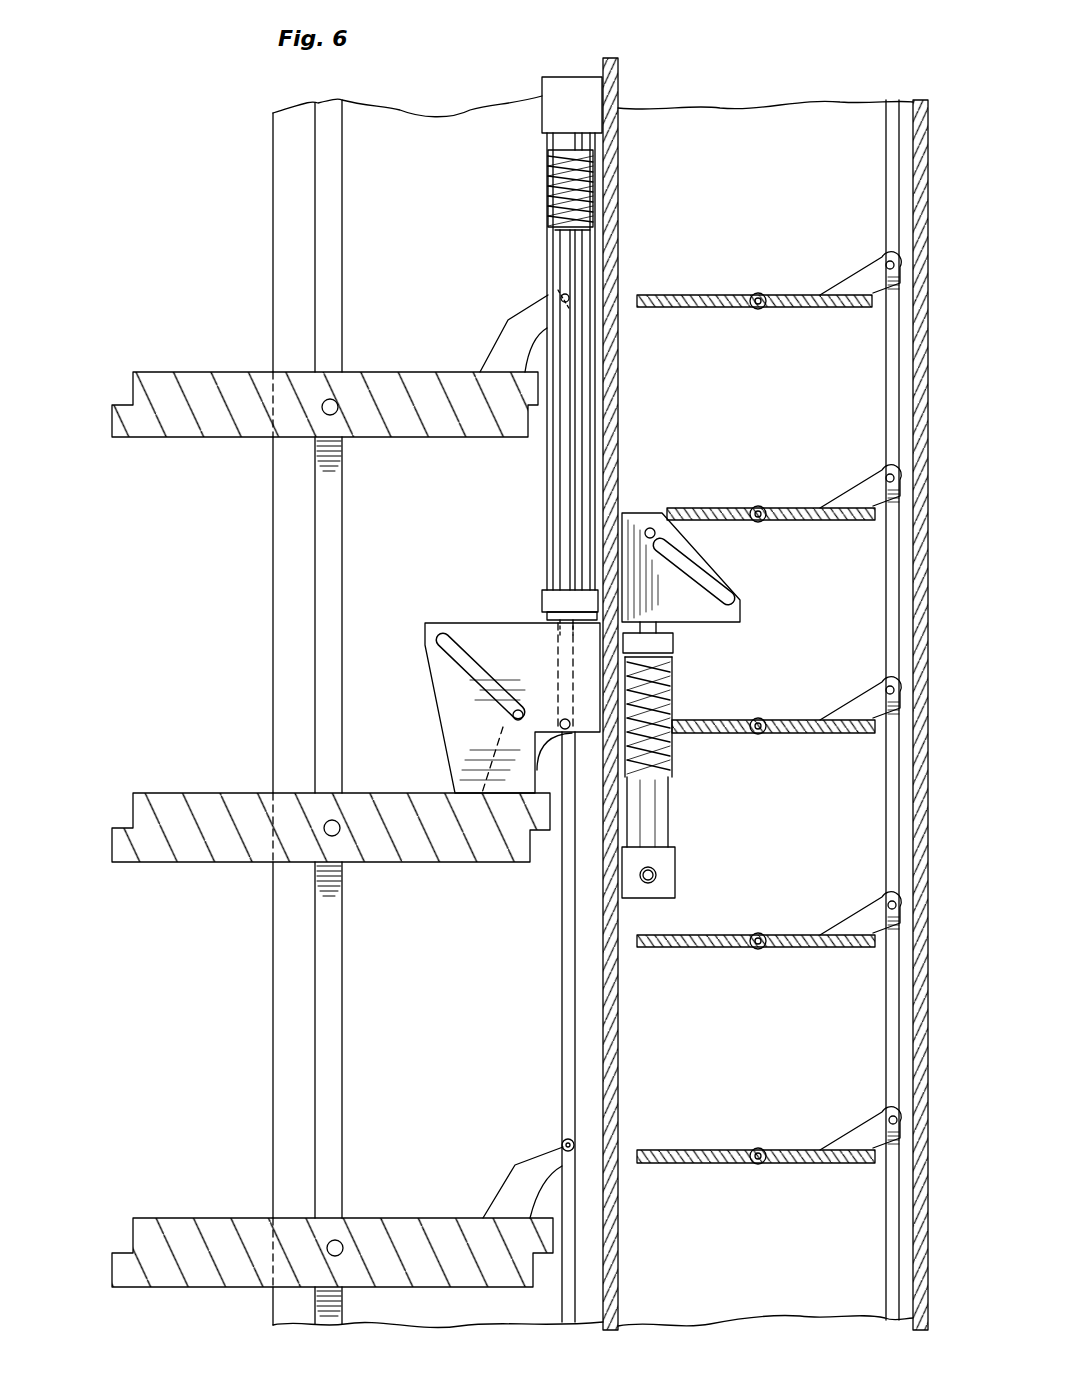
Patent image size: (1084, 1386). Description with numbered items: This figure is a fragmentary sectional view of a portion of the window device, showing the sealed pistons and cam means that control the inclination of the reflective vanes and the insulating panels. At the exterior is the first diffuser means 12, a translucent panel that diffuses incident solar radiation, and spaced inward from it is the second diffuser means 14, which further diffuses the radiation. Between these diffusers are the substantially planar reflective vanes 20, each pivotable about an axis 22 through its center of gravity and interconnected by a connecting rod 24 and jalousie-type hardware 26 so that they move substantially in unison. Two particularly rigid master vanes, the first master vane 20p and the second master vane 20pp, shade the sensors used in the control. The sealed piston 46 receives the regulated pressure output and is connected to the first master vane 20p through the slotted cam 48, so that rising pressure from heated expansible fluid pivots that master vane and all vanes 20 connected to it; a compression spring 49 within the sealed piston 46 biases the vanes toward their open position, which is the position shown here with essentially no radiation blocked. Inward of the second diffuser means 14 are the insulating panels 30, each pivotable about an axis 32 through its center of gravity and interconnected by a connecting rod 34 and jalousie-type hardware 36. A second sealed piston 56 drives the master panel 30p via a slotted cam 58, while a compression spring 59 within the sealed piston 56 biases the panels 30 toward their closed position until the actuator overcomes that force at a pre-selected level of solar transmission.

The first diffuser means 12 is at (926, 600).
The second diffuser means 14 is at (612, 1025).
The reflective vanes 20 is at (710, 292).
The master vane 20p is at (750, 505).
The master vane 20pp is at (790, 735).
The axis 22 is at (760, 1165).
The connecting rod 24 is at (893, 555).
The jalousie-type hardware 26 is at (902, 482).
The insulating panels 30 is at (165, 380).
The master panel 30p is at (160, 800).
The axis 32 is at (323, 415).
The connecting rod 34 is at (560, 1055).
The jalousie-type hardware 36 is at (562, 1142).
The sealed piston 46 is at (672, 688).
The slotted cam 48 is at (722, 590).
The compression spring 49 is at (672, 778).
The sealed piston 56 is at (546, 478).
The slotted cam 58 is at (465, 626).
The compression spring 59 is at (540, 188).